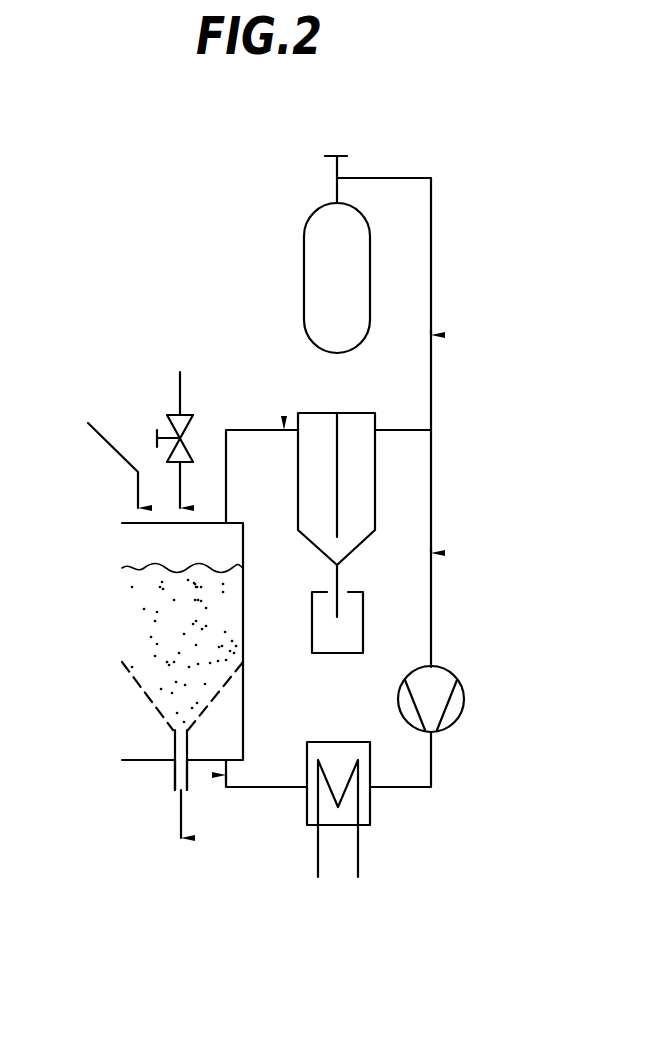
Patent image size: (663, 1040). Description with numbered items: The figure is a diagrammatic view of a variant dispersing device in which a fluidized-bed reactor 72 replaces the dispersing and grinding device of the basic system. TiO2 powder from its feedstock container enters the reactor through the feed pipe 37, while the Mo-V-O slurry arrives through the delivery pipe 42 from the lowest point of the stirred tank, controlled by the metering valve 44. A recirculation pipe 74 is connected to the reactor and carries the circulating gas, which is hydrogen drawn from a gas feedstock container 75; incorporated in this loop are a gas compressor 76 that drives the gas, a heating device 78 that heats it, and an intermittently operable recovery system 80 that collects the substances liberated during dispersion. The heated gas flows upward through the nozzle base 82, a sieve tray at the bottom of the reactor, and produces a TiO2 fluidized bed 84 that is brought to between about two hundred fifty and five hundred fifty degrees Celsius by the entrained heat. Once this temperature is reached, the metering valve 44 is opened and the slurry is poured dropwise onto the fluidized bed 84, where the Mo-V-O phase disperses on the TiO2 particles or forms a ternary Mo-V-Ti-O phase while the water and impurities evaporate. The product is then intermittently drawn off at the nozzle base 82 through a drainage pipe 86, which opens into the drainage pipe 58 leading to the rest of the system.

The feed pipe 37 is at (107, 443).
The delivery pipe 42 is at (180, 385).
The metering valve 44 is at (193, 425).
The drainage pipe 58 is at (181, 810).
The fluidized-bed reactor 72 is at (122, 551).
The recirculation pipe 74 is at (267, 430).
The gas feedstock container 75 is at (304, 272).
The gas compressor 76 is at (465, 698).
The heating device 78 is at (360, 826).
The recovery system 80 is at (375, 460).
The nozzle base 82 is at (125, 700).
The TiO2 fluidized bed 84 is at (140, 626).
The drainage pipe 86 is at (175, 772).